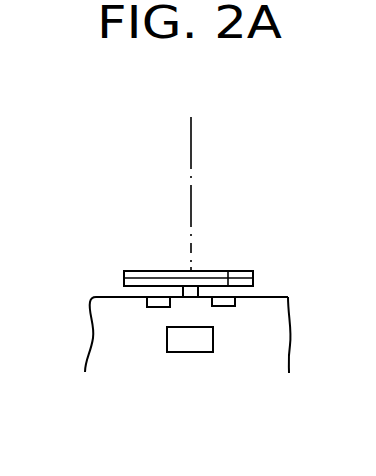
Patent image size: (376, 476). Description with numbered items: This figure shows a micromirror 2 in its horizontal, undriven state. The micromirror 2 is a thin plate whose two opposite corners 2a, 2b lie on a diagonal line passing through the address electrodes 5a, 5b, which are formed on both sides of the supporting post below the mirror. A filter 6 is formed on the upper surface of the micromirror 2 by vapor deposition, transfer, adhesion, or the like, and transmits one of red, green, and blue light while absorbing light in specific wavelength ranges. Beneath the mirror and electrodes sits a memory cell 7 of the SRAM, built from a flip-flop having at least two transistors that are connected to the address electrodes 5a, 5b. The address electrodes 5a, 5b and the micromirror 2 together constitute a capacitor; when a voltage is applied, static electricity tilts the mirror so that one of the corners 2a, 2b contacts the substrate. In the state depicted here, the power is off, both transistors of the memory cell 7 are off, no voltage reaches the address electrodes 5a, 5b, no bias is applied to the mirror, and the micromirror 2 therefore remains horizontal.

The micromirror 2 is at (228, 271).
The corner 2a is at (124, 278).
The corner 2b is at (253, 278).
The address electrode 5a is at (152, 307).
The address electrode 5b is at (223, 306).
The filter 6 is at (148, 271).
The memory cell 7 is at (188, 343).